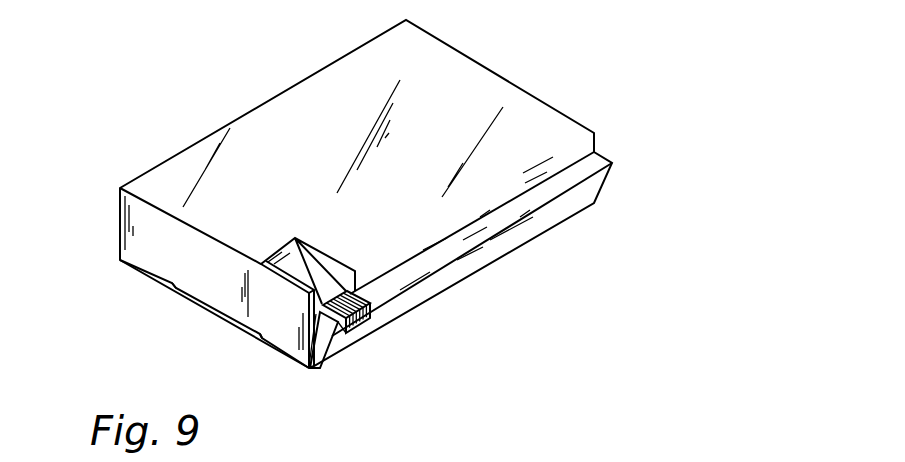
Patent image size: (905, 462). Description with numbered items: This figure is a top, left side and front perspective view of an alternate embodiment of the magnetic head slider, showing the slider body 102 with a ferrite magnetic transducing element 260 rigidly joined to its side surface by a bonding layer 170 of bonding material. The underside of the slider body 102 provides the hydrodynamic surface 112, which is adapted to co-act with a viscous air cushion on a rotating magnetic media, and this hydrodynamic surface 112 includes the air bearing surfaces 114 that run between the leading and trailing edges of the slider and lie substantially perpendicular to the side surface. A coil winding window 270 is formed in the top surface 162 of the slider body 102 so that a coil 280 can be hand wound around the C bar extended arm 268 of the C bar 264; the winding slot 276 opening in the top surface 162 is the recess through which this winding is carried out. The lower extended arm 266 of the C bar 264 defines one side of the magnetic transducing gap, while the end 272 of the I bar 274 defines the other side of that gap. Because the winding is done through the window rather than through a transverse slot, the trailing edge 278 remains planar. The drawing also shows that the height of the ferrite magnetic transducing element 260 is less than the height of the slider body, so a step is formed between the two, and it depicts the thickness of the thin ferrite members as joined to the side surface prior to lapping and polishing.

The slider body 102 is at (530, 79).
The hydrodynamic surface 112 is at (205, 300).
The air bearing surfaces 114 is at (268, 335).
The top surface 162 is at (458, 63).
The bonding layer 170 is at (597, 151).
The magnetic transducing element 260 is at (610, 177).
The C bar 264 is at (553, 218).
The lower extended arm 266 is at (348, 342).
The C bar extended arm 268 is at (372, 293).
The coil winding window 270 is at (365, 325).
The end of I bar 272 is at (318, 362).
The I bar 274 is at (312, 370).
The recess 276 is at (300, 272).
The trailing edge 278 is at (155, 236).
The coil 280 is at (368, 310).